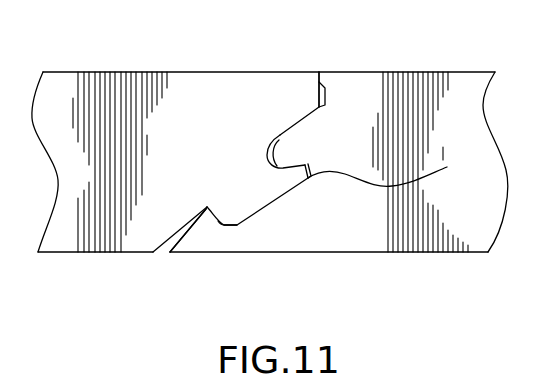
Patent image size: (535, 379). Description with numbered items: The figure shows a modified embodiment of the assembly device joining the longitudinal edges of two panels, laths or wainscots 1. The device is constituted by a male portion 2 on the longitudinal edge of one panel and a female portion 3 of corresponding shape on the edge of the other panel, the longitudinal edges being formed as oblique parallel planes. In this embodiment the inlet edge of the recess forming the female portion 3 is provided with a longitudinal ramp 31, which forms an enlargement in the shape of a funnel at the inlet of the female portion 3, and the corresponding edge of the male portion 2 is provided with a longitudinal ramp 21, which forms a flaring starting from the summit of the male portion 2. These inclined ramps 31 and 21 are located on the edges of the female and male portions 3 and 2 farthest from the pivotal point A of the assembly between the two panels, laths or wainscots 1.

The panels, laths or wainscots 1 is at (100, 208).
The male portion 2 is at (247, 197).
The female portion 3 is at (316, 167).
The longitudinal ramp 21 is at (237, 225).
The longitudinal ramp 31 is at (210, 215).
The pivotal point A is at (320, 72).